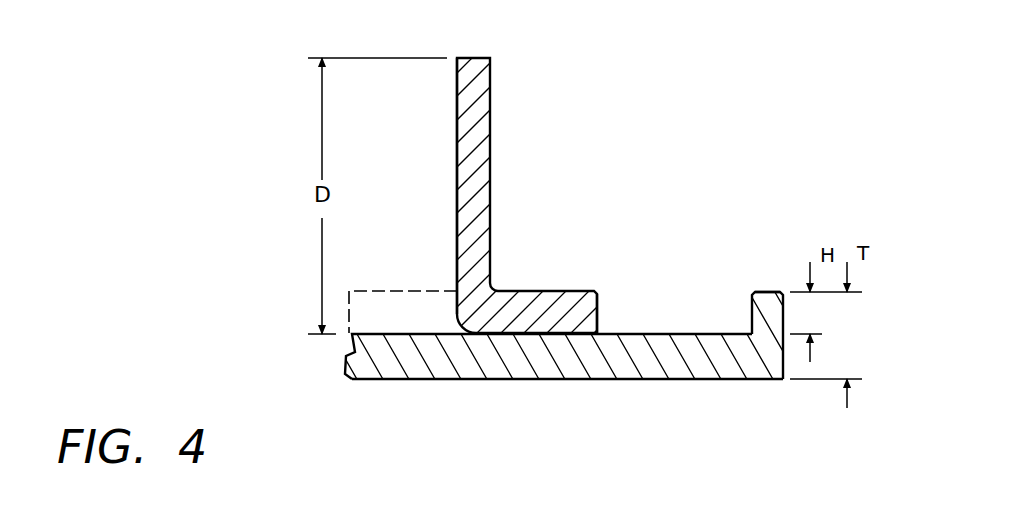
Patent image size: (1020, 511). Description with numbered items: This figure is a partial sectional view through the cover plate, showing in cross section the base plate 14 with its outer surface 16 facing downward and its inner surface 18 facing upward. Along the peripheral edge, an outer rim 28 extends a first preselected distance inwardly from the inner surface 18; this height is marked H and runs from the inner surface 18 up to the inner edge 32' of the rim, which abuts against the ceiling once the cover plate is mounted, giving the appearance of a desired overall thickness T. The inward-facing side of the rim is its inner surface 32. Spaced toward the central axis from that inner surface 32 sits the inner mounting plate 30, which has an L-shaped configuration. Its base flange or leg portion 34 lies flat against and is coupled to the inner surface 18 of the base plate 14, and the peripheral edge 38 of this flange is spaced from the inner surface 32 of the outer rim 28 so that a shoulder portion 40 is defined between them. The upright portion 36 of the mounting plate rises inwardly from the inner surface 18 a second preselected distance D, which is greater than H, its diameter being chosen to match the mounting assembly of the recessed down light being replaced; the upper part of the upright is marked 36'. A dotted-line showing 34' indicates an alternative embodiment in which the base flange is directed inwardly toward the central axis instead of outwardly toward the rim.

The base plate 14 is at (718, 379).
The outer surface 16 is at (440, 379).
The inner surface 18 is at (470, 333).
The outer rim 28 is at (783, 310).
The inner mounting plate 30 is at (490, 173).
The inner surface of the outer rim 32 is at (748, 275).
The inner edge of the outer rim 32' is at (780, 250).
The base flange or leg portion 34 is at (536, 276).
The base flange or leg portion (alternative, dotted) 34' is at (403, 274).
The upright portion 36 is at (423, 222).
The upper outer surface of wall 36' is at (415, 94).
The peripheral edge of the base flange 38 is at (598, 305).
The shoulder portion 40 is at (658, 334).